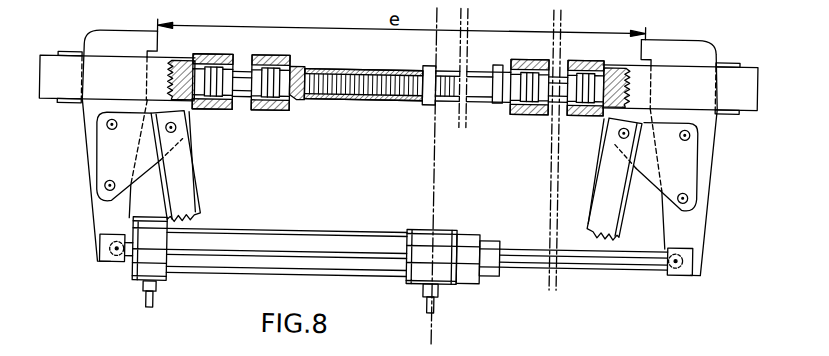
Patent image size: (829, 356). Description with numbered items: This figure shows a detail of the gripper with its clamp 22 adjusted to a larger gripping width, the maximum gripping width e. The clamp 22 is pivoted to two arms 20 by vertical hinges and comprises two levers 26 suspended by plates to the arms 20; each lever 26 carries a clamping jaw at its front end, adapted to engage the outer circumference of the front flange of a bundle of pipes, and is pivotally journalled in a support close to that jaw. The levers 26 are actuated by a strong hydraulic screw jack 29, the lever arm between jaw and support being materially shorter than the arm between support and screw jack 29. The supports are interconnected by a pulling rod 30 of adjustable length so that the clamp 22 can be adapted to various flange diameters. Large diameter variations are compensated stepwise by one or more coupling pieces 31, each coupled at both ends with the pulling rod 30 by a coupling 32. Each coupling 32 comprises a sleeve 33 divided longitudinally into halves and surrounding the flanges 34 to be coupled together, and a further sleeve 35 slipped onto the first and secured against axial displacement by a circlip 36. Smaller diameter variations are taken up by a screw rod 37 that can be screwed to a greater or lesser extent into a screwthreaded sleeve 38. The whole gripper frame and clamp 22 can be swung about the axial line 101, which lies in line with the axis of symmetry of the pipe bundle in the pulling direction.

The arm 20 is at (188, 189).
The clamp 22 is at (716, 204).
The lever 26 is at (90, 160).
The hydraulic screw jack 29 is at (327, 248).
The pulling rod 30 is at (369, 108).
The coupling piece 31 is at (244, 88).
The coupling 32 is at (301, 51).
The sleeve 33 is at (289, 104).
The flange 34 is at (268, 66).
The sleeve 35 is at (261, 53).
The circlip 36 is at (266, 108).
The screw rod 37 is at (448, 99).
The screwthreaded sleeve 38 is at (381, 100).
The axial line 101 is at (434, 187).